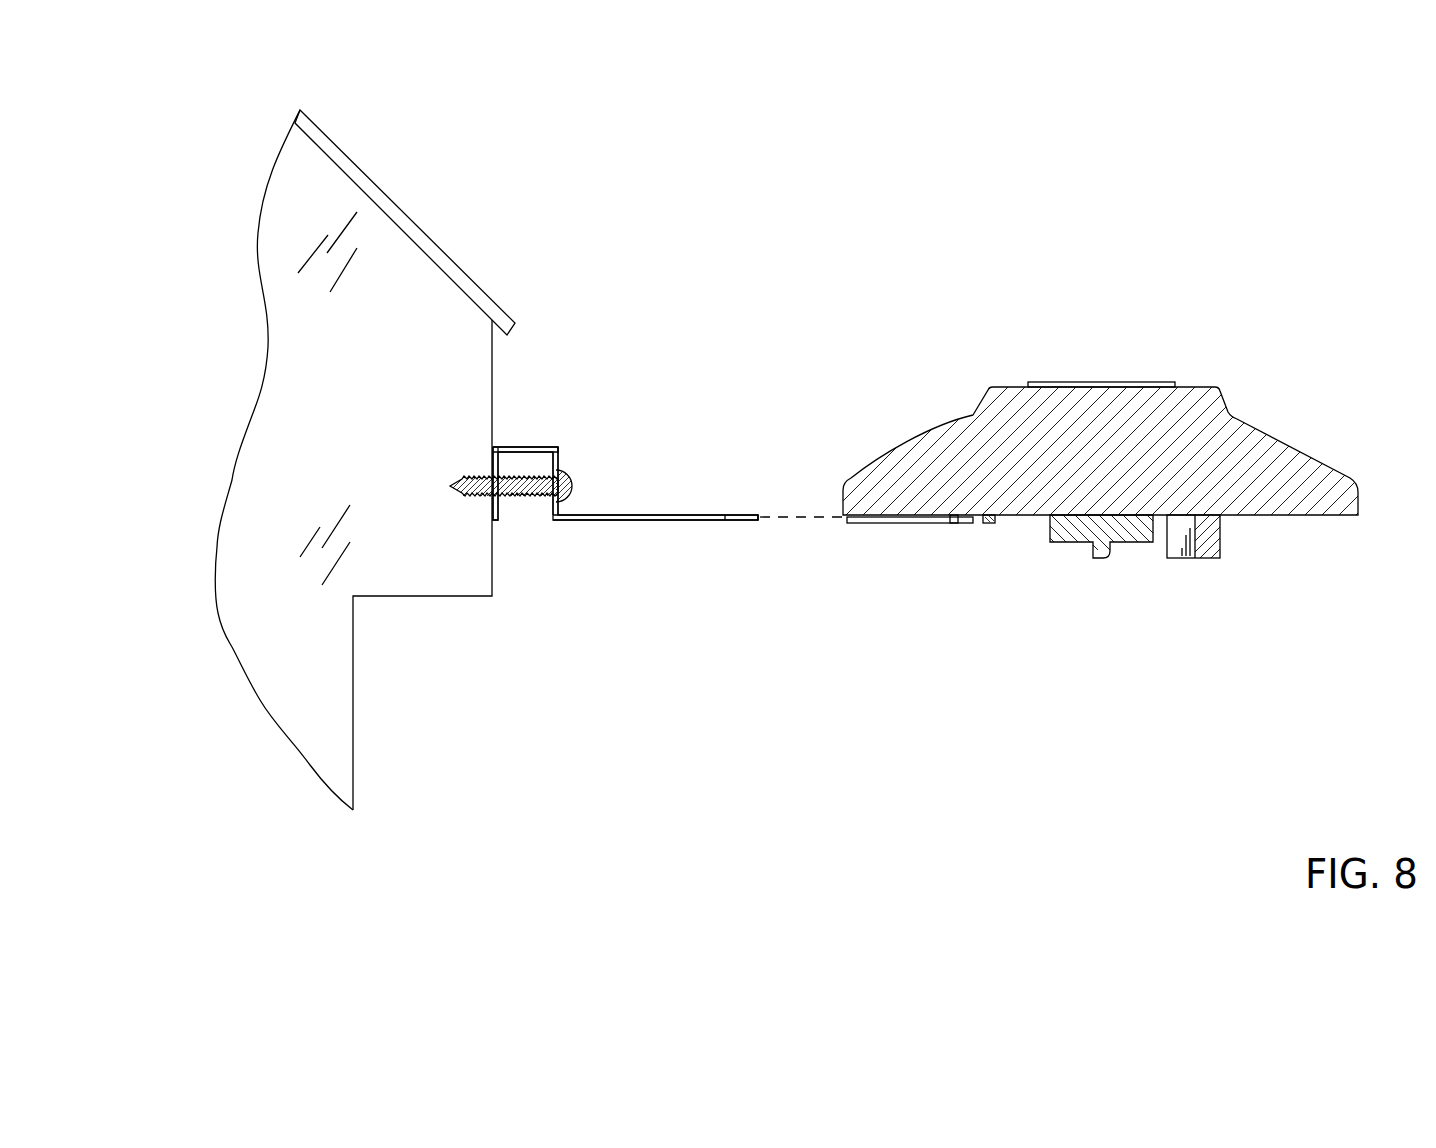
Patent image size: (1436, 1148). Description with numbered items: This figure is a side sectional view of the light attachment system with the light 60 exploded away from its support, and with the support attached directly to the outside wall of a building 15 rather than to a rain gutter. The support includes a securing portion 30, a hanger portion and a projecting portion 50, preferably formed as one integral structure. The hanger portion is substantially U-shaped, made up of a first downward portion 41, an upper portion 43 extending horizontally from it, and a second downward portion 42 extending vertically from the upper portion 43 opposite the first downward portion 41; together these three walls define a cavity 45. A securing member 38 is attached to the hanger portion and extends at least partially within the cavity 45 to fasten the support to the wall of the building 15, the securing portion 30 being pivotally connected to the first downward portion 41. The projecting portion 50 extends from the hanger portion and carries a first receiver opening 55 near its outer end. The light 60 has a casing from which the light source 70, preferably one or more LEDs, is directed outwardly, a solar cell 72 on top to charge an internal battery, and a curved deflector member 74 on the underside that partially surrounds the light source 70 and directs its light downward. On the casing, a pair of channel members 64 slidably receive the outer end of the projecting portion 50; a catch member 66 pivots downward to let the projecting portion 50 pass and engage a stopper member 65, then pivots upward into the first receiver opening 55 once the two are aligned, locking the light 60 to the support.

The building 15 is at (278, 353).
The securing portion 30 is at (493, 510).
The securing member 38 is at (457, 483).
The first downward portion 41 is at (497, 500).
The second downward portion 42 is at (558, 453).
The upper portion 43 is at (545, 447).
The cavity 45 is at (524, 452).
The projecting portion 50 is at (663, 540).
The first receiver opening 55 is at (727, 513).
The light 60 is at (1294, 420).
The channel members 64 is at (860, 523).
The stopper member 65 is at (987, 523).
The catch member 66 is at (952, 523).
The light source 70 is at (1100, 560).
The solar cell 72 is at (1132, 382).
The deflector member 74 is at (1222, 535).